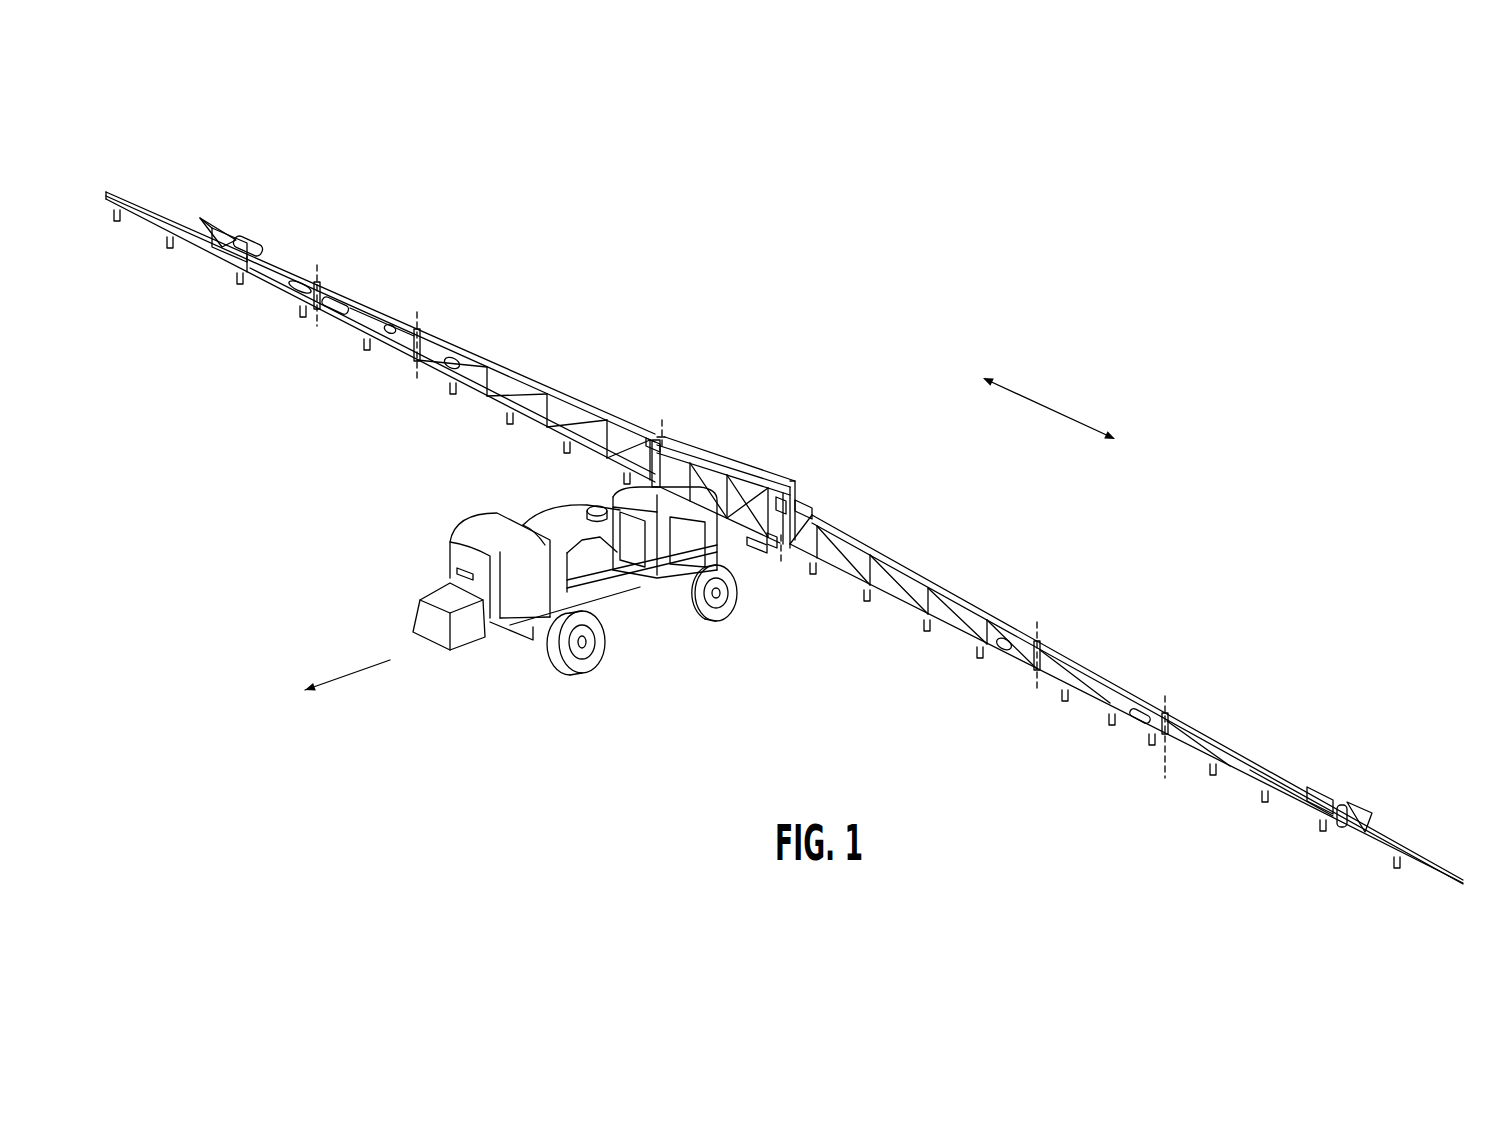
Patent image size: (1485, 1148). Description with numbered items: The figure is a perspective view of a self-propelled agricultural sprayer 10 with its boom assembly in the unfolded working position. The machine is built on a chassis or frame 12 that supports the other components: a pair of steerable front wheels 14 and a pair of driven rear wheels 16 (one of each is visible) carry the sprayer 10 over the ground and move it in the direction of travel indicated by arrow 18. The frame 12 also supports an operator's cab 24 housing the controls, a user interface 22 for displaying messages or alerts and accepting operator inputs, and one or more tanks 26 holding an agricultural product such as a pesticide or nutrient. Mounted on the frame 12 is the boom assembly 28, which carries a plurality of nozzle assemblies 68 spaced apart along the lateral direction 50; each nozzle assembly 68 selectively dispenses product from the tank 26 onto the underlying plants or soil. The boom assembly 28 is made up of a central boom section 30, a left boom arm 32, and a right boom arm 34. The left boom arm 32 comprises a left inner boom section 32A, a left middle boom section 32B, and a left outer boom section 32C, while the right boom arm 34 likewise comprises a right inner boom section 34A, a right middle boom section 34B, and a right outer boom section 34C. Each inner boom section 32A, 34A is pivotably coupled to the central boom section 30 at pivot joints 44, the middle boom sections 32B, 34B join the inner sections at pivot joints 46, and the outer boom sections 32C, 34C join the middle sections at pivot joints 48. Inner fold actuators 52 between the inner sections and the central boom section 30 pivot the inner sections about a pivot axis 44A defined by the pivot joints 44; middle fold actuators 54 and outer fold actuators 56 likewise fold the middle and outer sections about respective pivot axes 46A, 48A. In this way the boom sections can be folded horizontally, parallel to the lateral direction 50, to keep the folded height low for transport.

The agricultural sprayer 10 is at (205, 188).
The chassis or frame 12 is at (620, 612).
The steerable front wheels 14 is at (570, 670).
The driven rear wheels 16 is at (722, 615).
The direction of travel 18 is at (355, 673).
The user interface 22 is at (462, 575).
The operator's cab 24 is at (475, 533).
The tank 26 is at (563, 513).
The boom assembly 28 is at (845, 495).
The central boom section 30 is at (743, 455).
The left boom arm 32 is at (1140, 558).
The left inner boom section 32A is at (912, 566).
The left middle boom section 32B is at (1130, 692).
The left outer boom section 32C is at (1250, 765).
The right boom arm 34 is at (580, 290).
The right inner boom section 34A is at (506, 374).
The right middle boom section 34B is at (355, 300).
The right outer boom section 34C is at (283, 276).
The pivot joint 44 is at (667, 470).
The pivot axis 44A is at (662, 428).
The pivot joint 46 is at (1038, 636).
The pivot axis 46A is at (417, 378).
The pivot joint 48 is at (318, 280).
The pivot axis 48A is at (317, 324).
The lateral direction 50 is at (1055, 410).
The inner fold actuator 52 is at (660, 446).
The middle fold actuator 54 is at (456, 360).
The outer fold actuator 56 is at (345, 314).
The nozzle assembly 68 is at (452, 398).